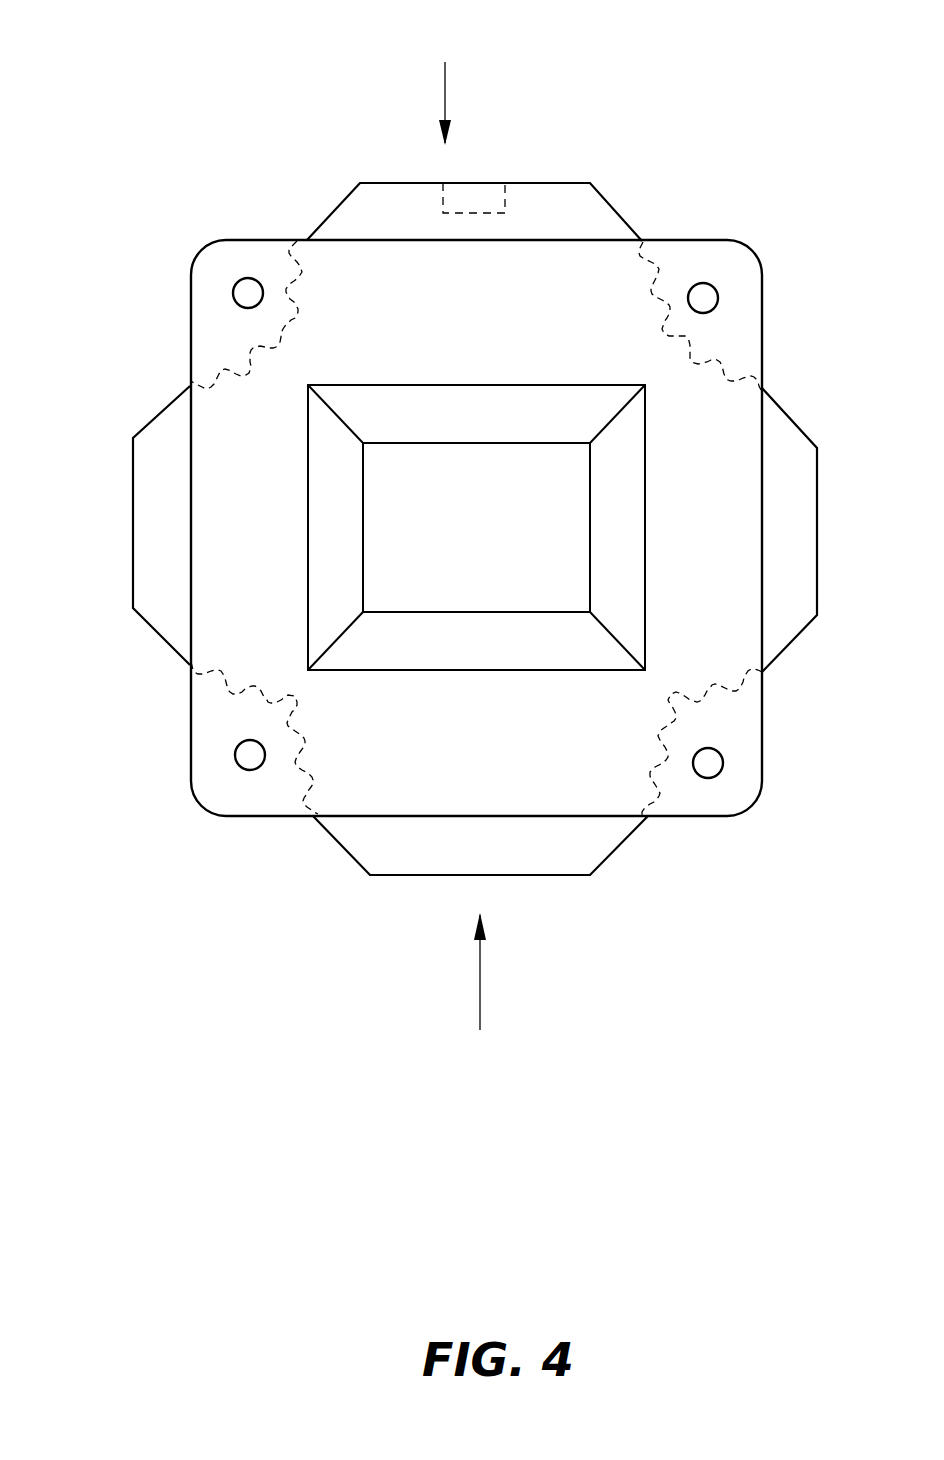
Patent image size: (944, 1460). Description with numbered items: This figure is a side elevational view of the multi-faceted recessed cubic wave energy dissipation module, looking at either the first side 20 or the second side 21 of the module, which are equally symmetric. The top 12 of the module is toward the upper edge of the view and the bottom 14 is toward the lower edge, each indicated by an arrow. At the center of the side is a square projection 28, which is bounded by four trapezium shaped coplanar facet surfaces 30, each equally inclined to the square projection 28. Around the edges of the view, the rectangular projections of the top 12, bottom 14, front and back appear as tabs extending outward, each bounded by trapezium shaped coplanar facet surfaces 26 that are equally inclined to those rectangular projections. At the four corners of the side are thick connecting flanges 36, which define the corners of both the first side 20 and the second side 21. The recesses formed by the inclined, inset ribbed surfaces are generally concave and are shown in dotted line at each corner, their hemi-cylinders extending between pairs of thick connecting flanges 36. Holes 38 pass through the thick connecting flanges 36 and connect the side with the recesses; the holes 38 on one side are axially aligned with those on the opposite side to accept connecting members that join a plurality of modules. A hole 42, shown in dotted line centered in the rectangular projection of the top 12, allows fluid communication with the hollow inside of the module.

The first side 20 is at (262, 135).
The corner bracket / saddle 21 is at (416, 410).
The top 12 is at (461, 79).
The bottom 14 is at (479, 1001).
The trapezium shaped coplanar facet surfaces 26 is at (397, 231).
The square projection 28 is at (489, 543).
The trapezium shaped coplanar facet surfaces 30 is at (487, 428).
The thick connecting flanges 36 is at (208, 277).
The holes 38 is at (247, 298).
The hole 42 is at (472, 203).